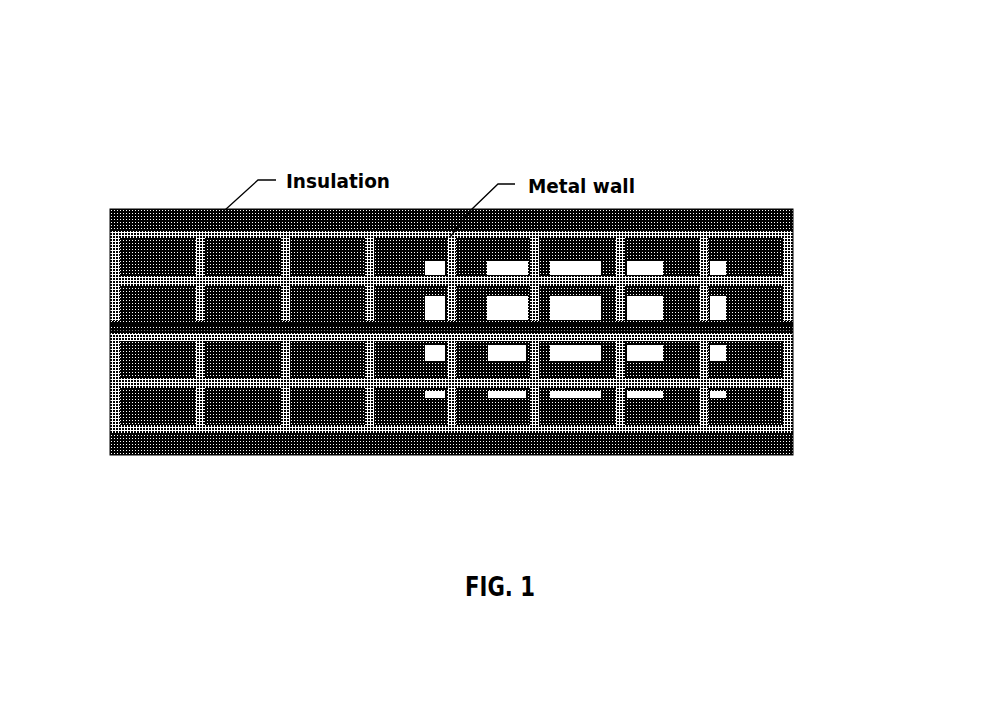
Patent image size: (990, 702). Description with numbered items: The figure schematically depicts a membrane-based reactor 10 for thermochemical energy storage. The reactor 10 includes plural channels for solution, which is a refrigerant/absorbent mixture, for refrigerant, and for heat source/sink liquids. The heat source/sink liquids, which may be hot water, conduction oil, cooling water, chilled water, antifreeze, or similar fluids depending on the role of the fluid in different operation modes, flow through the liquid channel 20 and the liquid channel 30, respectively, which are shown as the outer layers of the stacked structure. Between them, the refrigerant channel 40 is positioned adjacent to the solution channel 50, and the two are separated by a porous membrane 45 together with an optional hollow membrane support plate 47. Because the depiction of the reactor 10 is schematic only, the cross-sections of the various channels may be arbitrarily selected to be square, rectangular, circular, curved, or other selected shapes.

The membrane-based reactor 10 is at (866, 99).
The liquid channel 20 is at (491, 230).
The liquid channel 30 is at (494, 446).
The refrigerant channel 40 is at (491, 332).
The porous membrane 45 is at (494, 348).
The hollow membrane support plate 47 is at (494, 317).
The solution channel 50 is at (499, 331).